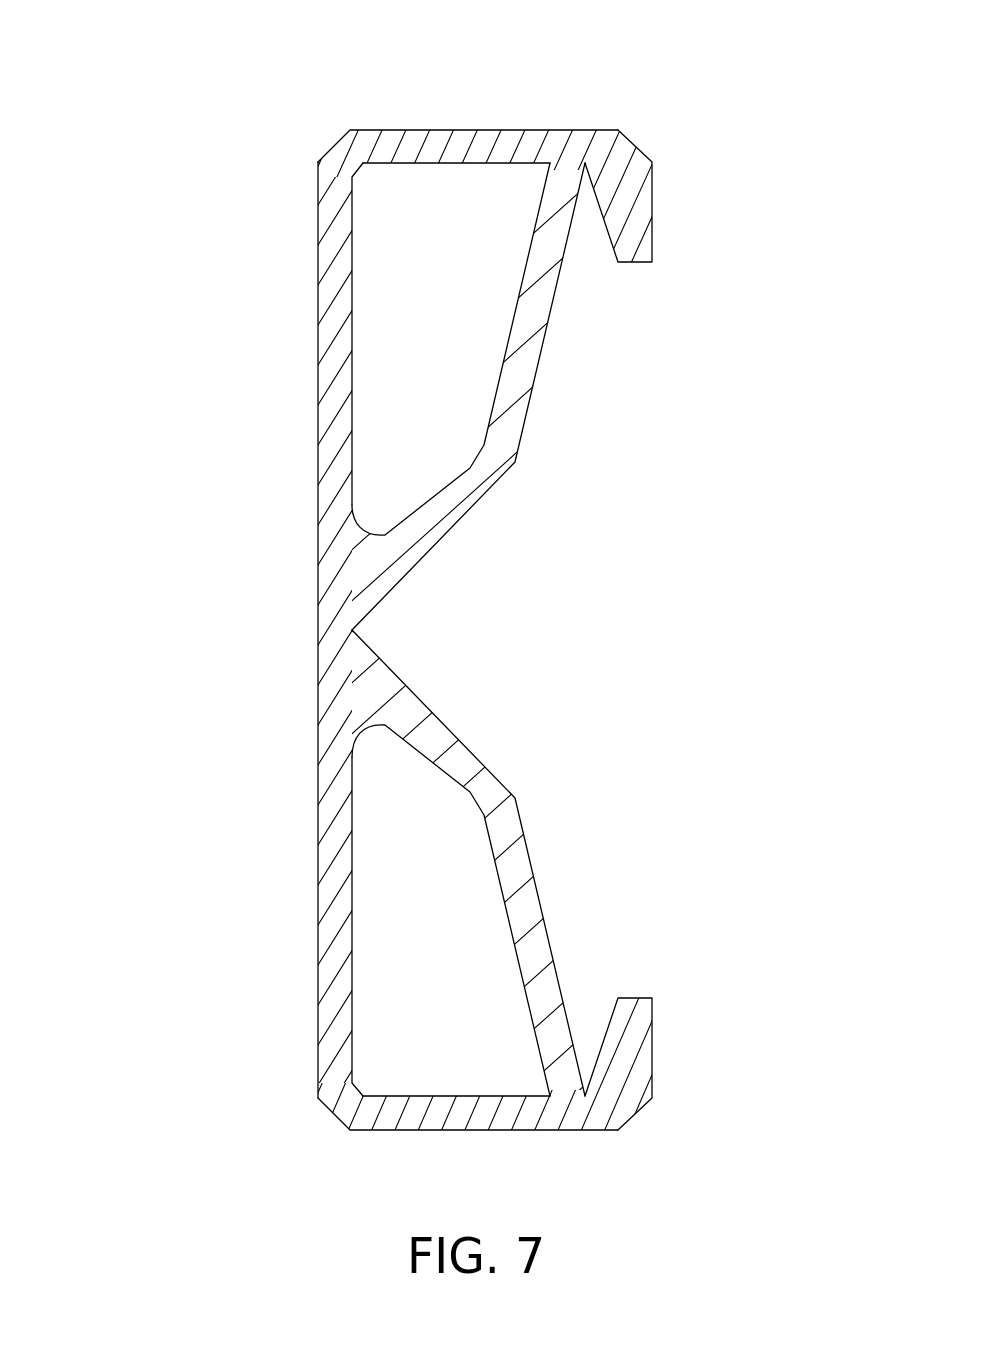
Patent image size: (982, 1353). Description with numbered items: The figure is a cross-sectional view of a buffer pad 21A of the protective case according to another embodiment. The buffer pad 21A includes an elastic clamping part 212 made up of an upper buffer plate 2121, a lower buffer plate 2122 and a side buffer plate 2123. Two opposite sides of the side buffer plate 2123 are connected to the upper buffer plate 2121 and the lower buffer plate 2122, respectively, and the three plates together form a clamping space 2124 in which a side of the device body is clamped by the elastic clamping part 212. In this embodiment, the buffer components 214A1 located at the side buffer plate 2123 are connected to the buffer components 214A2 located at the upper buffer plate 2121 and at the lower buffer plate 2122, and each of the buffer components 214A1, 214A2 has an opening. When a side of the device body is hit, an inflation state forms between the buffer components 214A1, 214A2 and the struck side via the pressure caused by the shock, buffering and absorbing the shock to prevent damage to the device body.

The buffer pad 21A is at (527, 123).
The elastic clamping part 212 is at (125, 583).
The upper buffer plate 2121 is at (452, 148).
The side buffer plate 2123 is at (352, 630).
The lower buffer plate 2122 is at (458, 1112).
The buffer component 214A1 is at (457, 507).
The buffer component 214A2 is at (630, 210).
The clamping space 2124 is at (587, 620).